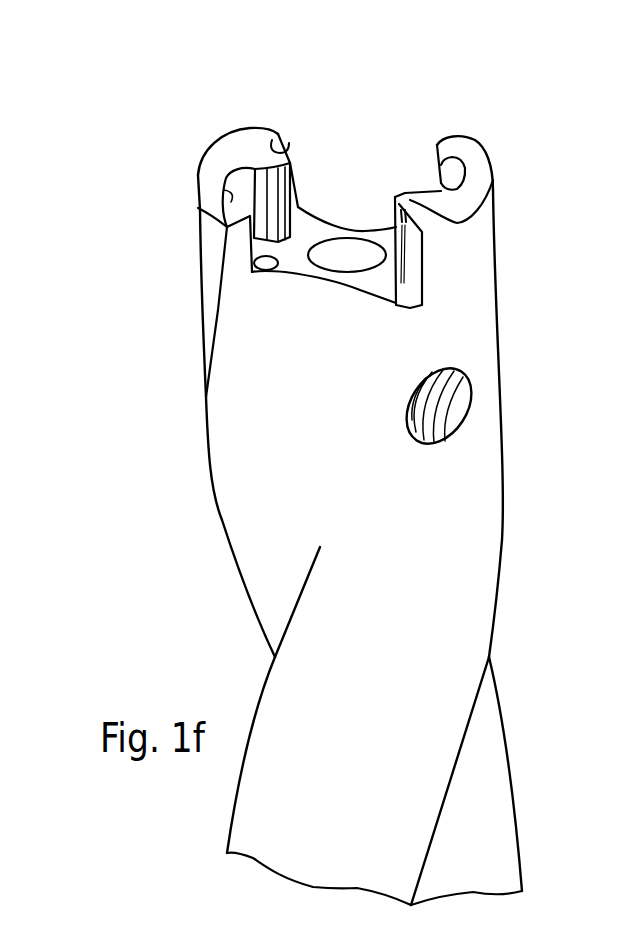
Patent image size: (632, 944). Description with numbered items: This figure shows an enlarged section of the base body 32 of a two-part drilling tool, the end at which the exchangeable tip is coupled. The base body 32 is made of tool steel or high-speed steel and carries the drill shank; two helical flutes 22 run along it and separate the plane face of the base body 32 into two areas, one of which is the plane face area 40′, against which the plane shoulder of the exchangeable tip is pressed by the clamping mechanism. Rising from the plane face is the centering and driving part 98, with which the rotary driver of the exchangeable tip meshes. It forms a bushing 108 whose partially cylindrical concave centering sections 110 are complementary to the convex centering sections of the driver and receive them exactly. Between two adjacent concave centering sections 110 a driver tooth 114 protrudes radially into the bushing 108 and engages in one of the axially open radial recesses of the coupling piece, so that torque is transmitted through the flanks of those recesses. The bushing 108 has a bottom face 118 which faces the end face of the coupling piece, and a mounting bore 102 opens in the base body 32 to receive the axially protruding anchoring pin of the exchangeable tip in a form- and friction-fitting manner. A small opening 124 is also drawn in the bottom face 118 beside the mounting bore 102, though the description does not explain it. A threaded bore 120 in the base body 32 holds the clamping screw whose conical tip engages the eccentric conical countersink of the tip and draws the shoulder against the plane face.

The helical flute 22 is at (478, 753).
The base body 32 is at (463, 530).
The plane face area 40′ is at (483, 148).
The centering and driving part 98 is at (468, 192).
The mounting bore 102 is at (352, 258).
The bushing 108 is at (388, 194).
The concave centering section 110 is at (224, 192).
The driver tooth 114 is at (287, 190).
The bottom face 118 is at (291, 267).
The threaded bore 120 is at (447, 397).
The opening 124 is at (262, 268).